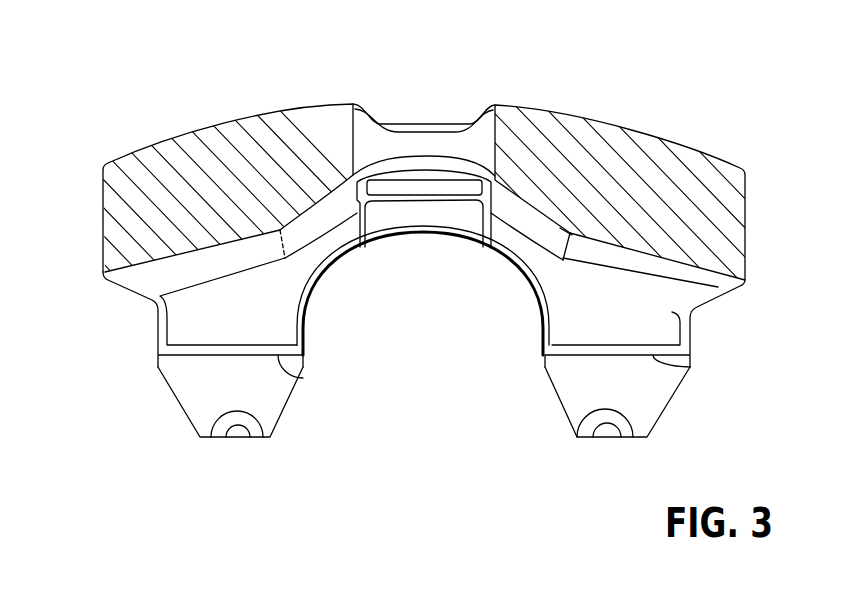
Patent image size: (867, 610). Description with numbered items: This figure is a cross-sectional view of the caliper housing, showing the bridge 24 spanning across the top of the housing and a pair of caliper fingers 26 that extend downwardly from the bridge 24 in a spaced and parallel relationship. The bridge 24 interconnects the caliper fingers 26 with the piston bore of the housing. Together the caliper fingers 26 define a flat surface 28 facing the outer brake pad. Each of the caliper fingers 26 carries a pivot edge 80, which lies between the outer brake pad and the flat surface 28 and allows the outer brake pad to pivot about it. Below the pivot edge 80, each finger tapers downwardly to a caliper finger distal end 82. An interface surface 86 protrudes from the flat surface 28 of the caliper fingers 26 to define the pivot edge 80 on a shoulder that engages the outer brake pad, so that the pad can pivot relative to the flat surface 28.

The bridge 24 is at (533, 108).
The caliper fingers 26 is at (412, 125).
The flat surface 28 is at (185, 325).
The pivot edge 80 is at (297, 380).
The caliper finger distal end 82 is at (227, 438).
The interface surface 86 is at (282, 400).